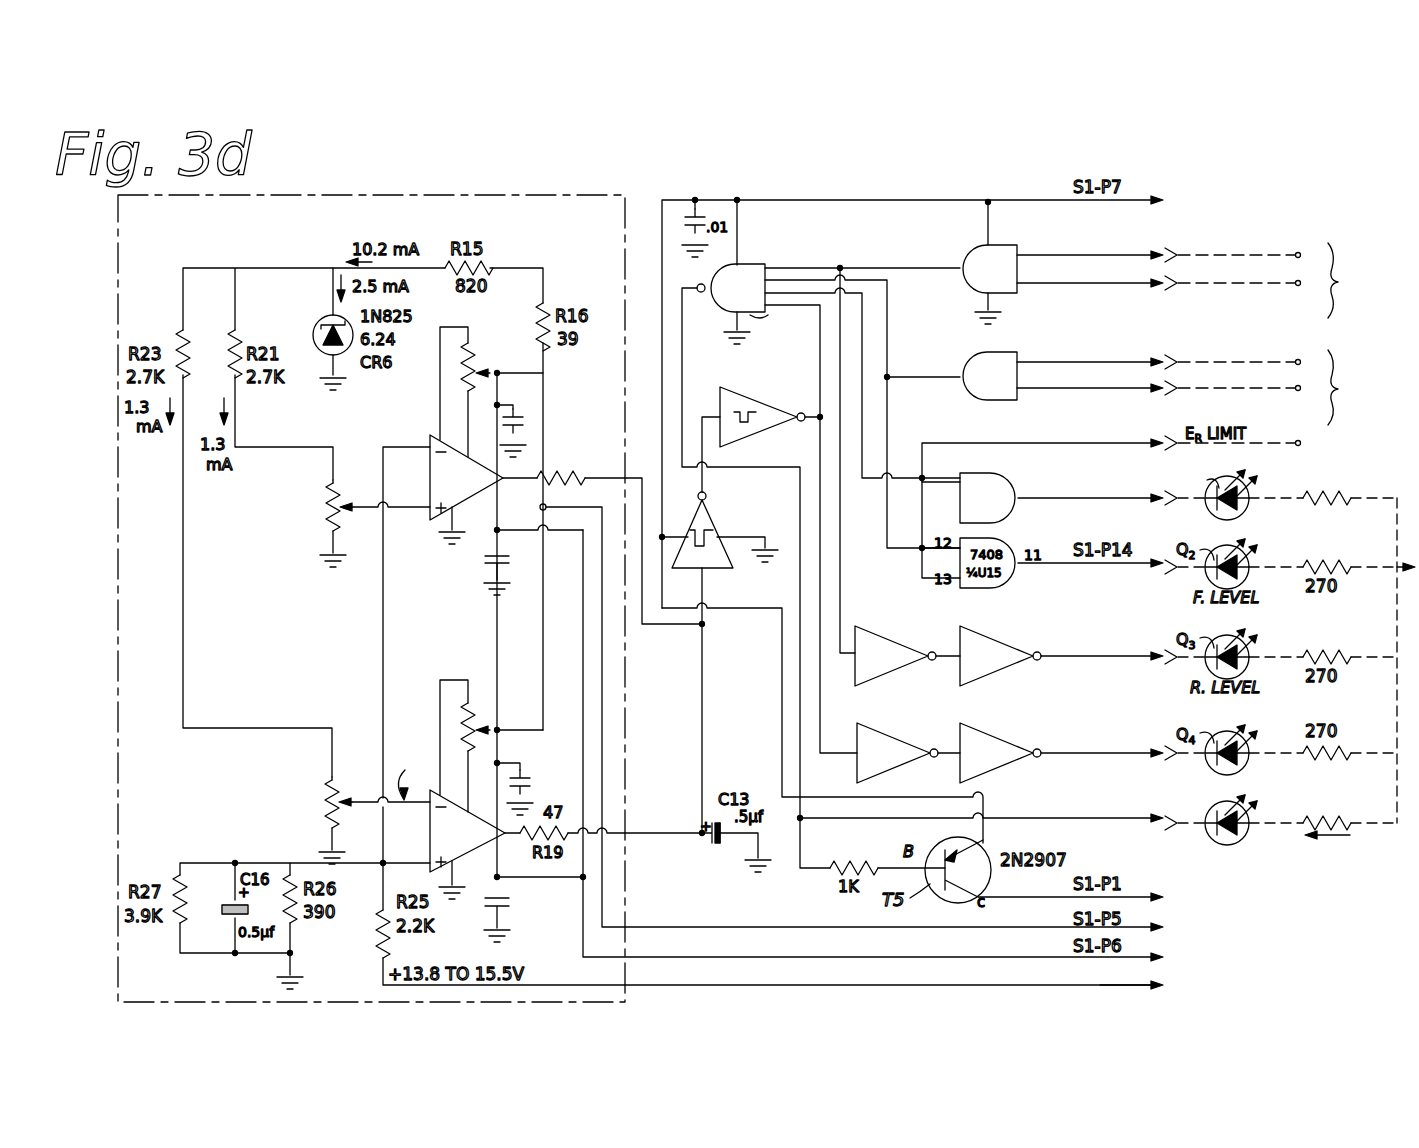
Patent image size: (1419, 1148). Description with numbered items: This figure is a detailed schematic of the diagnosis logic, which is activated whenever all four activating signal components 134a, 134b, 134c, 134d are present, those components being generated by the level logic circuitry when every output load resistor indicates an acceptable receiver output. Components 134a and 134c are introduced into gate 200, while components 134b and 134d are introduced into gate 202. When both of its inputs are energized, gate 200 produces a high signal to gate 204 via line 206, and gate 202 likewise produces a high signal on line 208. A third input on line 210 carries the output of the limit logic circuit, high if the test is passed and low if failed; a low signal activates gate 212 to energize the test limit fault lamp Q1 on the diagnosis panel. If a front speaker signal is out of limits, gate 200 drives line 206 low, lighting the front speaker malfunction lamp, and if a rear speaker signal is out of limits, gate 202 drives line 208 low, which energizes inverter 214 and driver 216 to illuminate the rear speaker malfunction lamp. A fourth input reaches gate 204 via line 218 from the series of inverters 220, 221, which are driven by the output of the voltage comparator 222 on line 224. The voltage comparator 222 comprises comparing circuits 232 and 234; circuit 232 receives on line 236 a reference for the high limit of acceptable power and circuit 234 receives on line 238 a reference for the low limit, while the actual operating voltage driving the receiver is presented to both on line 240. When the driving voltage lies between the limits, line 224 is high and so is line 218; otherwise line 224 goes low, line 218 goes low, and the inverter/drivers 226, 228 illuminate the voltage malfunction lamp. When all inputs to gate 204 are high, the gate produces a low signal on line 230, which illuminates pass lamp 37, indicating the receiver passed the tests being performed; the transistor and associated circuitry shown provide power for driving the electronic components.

The voltage comparator 222 is at (414, 197).
The line 236 is at (367, 517).
The comparing circuit 232 is at (479, 527).
The line 238 is at (360, 806).
The comparing circuit 234 is at (442, 864).
The line 240 is at (672, 986).
The line 208 is at (885, 236).
The line 206 is at (888, 322).
The line 210 is at (858, 472).
The line 218 is at (818, 350).
The gate 204 is at (778, 322).
The inverter 221 is at (742, 446).
The line 230 is at (682, 382).
The inverter 220 is at (712, 514).
The line 224 is at (708, 624).
The gate 202 is at (960, 283).
The gate 200 is at (972, 398).
The activating signal component 134d is at (1042, 258).
The activating signal component 134b is at (1046, 285).
The activating signal component 134c is at (1044, 360).
The activating signal component 134a is at (1048, 390).
The gate 212 is at (990, 472).
The inverter 214 is at (916, 636).
The driver 216 is at (992, 625).
The inverter/driver 226 is at (914, 726).
The inverter/driver 228 is at (992, 730).
The pass lamp 37 is at (1204, 834).
The test limit fault lamp Q1 is at (1281, 502).